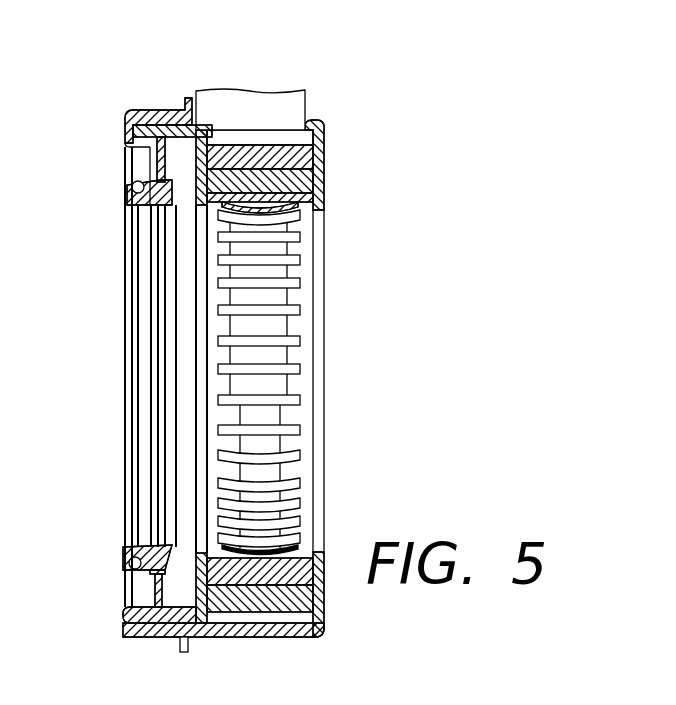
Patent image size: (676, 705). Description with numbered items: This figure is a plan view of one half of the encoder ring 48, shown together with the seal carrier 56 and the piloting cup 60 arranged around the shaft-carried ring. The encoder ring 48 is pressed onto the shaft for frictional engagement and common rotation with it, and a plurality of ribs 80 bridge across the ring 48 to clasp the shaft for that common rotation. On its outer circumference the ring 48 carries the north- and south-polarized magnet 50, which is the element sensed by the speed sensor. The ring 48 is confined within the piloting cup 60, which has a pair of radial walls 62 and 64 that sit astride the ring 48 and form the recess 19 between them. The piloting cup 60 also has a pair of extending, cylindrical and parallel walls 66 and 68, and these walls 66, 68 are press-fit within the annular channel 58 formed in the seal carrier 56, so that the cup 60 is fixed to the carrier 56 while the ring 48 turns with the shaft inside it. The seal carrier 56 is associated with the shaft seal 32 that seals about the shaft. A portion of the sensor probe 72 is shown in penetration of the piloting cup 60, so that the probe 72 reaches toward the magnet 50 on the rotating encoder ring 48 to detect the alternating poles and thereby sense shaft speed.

The recess 19 is at (263, 618).
The shaft seal 32 is at (122, 552).
The encoder ring 48 is at (307, 322).
The north- and south-polarized magnet 50 is at (310, 167).
The seal carrier 56 is at (127, 128).
The annular channel 58 is at (128, 632).
The piloting cup 60 is at (325, 132).
The radial wall 62 is at (207, 580).
The radial wall 64 is at (320, 190).
The cylindrical wall 66 is at (175, 127).
The cylindrical wall 68 is at (157, 143).
The sensor probe 72 is at (262, 100).
The ribs 80 is at (270, 277).